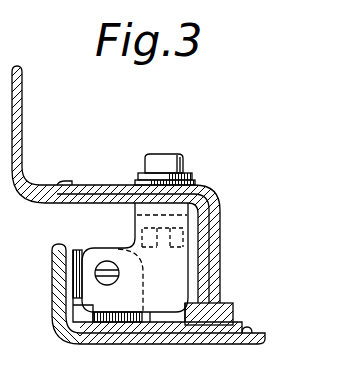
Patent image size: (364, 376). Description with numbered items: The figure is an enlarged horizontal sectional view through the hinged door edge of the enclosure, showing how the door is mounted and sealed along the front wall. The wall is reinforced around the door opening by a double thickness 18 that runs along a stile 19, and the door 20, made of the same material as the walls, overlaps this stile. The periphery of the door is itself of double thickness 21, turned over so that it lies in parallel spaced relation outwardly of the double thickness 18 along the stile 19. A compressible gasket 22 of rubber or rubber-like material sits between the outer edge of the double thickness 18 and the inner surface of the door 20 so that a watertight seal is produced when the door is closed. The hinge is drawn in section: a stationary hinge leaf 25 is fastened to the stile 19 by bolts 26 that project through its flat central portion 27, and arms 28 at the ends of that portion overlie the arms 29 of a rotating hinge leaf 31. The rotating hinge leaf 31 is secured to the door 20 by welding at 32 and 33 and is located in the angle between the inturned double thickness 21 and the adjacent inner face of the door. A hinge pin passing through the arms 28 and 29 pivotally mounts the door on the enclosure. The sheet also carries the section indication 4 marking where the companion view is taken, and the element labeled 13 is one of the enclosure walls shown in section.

The vertical flange 13 is at (18, 118).
The double thickness 18 is at (214, 238).
The stile 19 is at (88, 184).
The door 20 is at (240, 340).
The double thickness 21 is at (53, 263).
The compressible gasket 22 is at (226, 302).
The stationary hinge leaf 25 is at (128, 232).
The bolts 26 is at (162, 162).
The flat central portion 27 is at (113, 277).
The arms 28 is at (167, 304).
The arms 29 is at (157, 328).
The rotating hinge leaf 31 is at (80, 313).
The welding 32 is at (77, 244).
The welding 33 is at (112, 318).
The section line 4- 4 is at (43, 301).